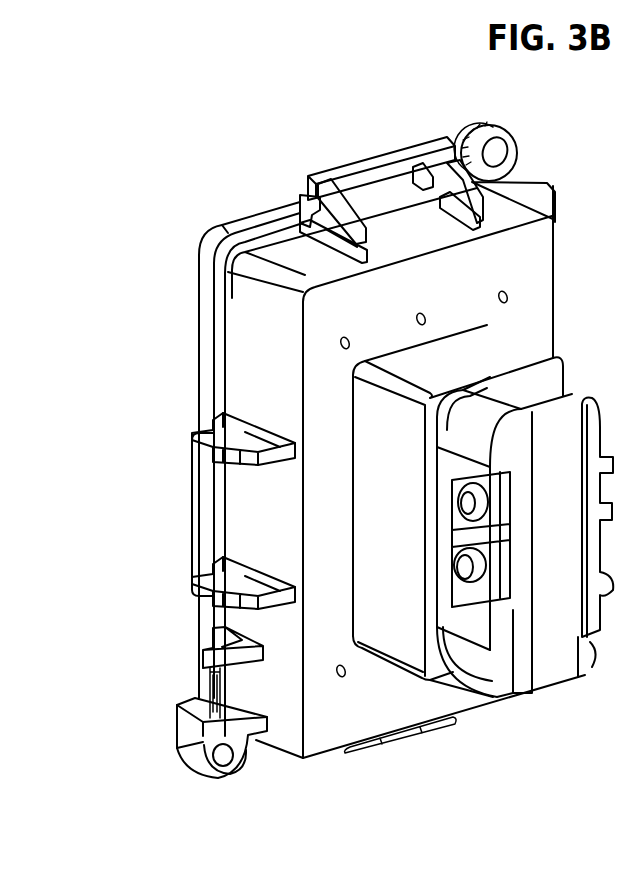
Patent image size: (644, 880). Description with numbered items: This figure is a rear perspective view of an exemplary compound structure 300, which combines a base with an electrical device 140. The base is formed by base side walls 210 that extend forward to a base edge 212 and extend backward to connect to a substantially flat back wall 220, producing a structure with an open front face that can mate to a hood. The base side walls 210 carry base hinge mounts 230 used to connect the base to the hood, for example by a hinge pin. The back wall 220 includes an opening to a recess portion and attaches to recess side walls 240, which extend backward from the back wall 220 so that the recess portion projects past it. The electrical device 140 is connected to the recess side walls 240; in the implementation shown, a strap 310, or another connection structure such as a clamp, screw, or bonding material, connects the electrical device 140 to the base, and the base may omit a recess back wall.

The compound structure 300 is at (163, 179).
The base side walls 210 is at (425, 241).
The base edge 212 is at (212, 349).
The back wall 220 is at (404, 708).
The base hinge mounts 230 is at (342, 170).
The recess side walls 240 is at (474, 369).
The strap 310 is at (574, 452).
The electrical device 140 is at (530, 718).